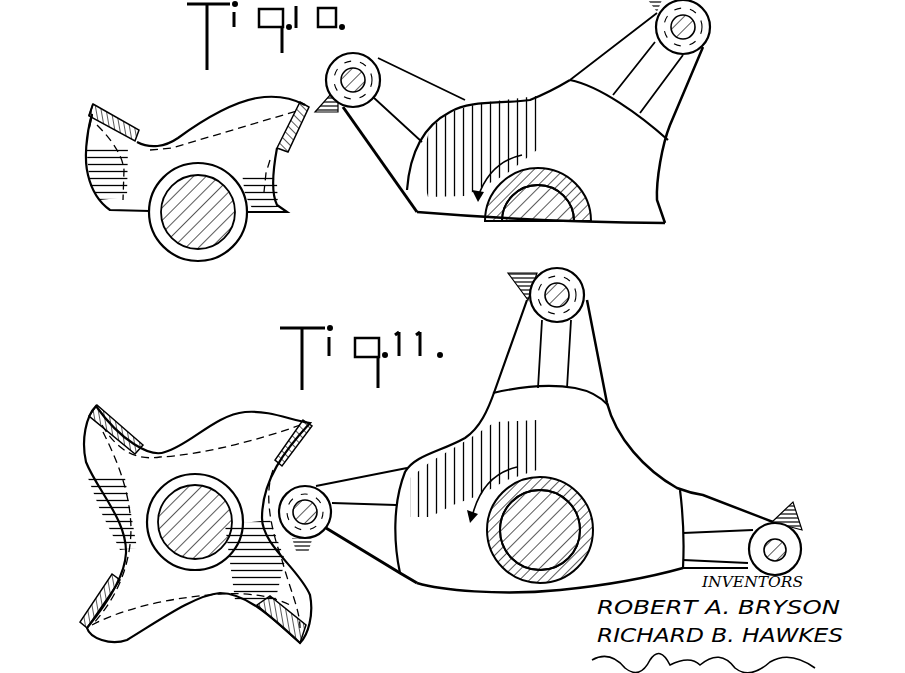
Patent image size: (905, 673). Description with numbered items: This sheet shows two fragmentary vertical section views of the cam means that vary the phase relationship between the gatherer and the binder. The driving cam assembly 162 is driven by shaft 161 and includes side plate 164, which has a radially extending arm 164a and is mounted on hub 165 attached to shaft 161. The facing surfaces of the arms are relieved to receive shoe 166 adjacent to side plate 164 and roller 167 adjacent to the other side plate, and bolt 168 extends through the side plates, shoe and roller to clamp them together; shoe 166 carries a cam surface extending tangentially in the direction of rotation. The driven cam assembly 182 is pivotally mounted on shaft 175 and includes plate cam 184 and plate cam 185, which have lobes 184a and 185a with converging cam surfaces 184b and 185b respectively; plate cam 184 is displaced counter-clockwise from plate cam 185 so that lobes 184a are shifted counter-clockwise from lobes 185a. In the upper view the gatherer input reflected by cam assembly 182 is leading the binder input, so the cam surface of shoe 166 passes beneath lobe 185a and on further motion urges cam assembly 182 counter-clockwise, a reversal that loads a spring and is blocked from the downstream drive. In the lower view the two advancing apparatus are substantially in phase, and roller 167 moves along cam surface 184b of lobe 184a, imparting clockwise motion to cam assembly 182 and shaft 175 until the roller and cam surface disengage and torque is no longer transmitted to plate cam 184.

In FIG. 10, the shaft 161 is at (548, 190).
In FIG. 11, the shaft 161 is at (582, 553).
In FIG. 10, the cam assembly 162 is at (553, 111).
In FIG. 11, the cam assembly 162 is at (541, 437).
In FIG. 10, the side plate 164 is at (640, 160).
In FIG. 11, the side plate 164 is at (608, 447).
In FIG. 10, the arm 164a is at (678, 82).
In FIG. 11, the arm 164a is at (730, 515).
In FIG. 10, the hub 165 is at (593, 210).
In FIG. 11, the hub 165 is at (595, 527).
In FIG. 10, the shoe 166 is at (413, 113).
In FIG. 11, the shoe 166 is at (368, 510).
In FIG. 10, the roller 167 is at (445, 0).
In FIG. 11, the roller 167 is at (307, 486).
In FIG. 10, the bolt 168 is at (687, 31).
In FIG. 11, the bolt 168 is at (584, 297).
In FIG. 10, the shaft 175 is at (177, 237).
In FIG. 11, the shaft 175 is at (167, 535).
In FIG. 10, the cam assembly 182 is at (188, 164).
In FIG. 11, the cam assembly 182 is at (202, 513).
In FIG. 10, the plate cam 184 is at (100, 197).
In FIG. 11, the plate cam 184 is at (117, 510).
In FIG. 10, the lobe 184a is at (90, 126).
In FIG. 11, the lobe 184a is at (96, 421).
In FIG. 11, the cam surface 184b is at (84, 622).
In FIG. 10, the plate cam 185 is at (258, 132).
In FIG. 11, the plate cam 185 is at (247, 446).
In FIG. 10, the lobe 185a is at (112, 104).
In FIG. 10, the cam surface 185b is at (97, 105).